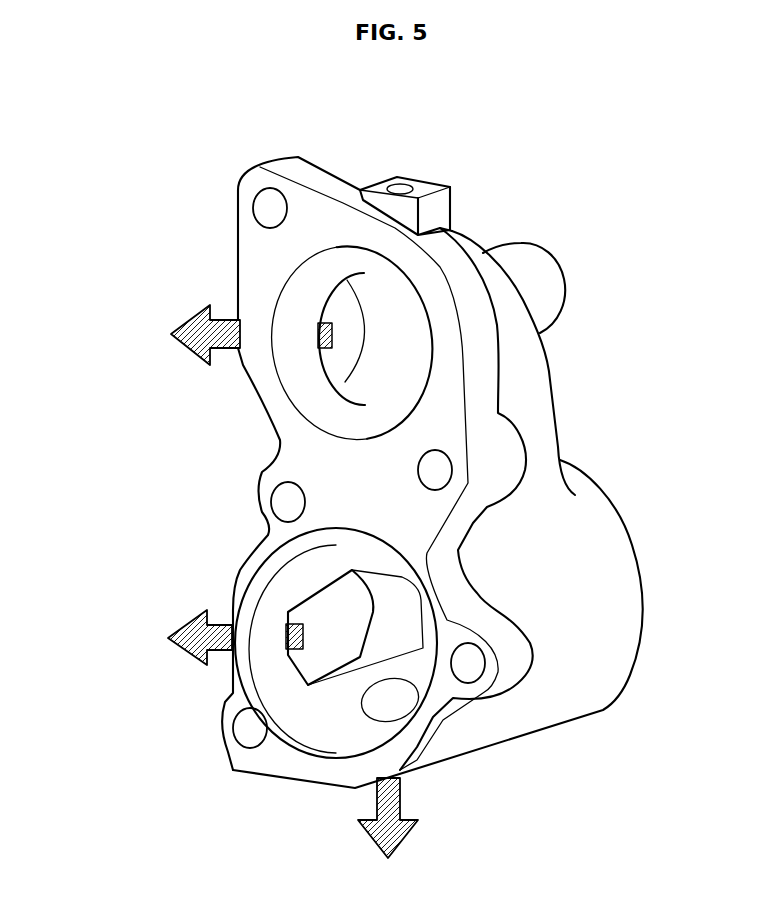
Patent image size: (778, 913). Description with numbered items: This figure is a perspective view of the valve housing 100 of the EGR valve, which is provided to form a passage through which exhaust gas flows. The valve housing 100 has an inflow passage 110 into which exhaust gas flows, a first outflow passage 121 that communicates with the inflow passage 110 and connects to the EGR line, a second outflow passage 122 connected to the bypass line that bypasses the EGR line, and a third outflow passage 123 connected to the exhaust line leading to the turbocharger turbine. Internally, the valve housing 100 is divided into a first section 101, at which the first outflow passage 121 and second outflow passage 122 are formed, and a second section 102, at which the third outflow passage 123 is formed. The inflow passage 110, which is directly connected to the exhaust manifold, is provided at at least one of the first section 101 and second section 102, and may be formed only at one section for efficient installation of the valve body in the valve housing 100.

The valve housing 100 is at (582, 134).
The first section 101 is at (342, 733).
The second section 102 is at (329, 404).
The inflow passage 110 is at (336, 247).
The first outflow passage 121 is at (182, 652).
The second outflow passage 122 is at (407, 842).
The third outflow passage 123 is at (188, 326).